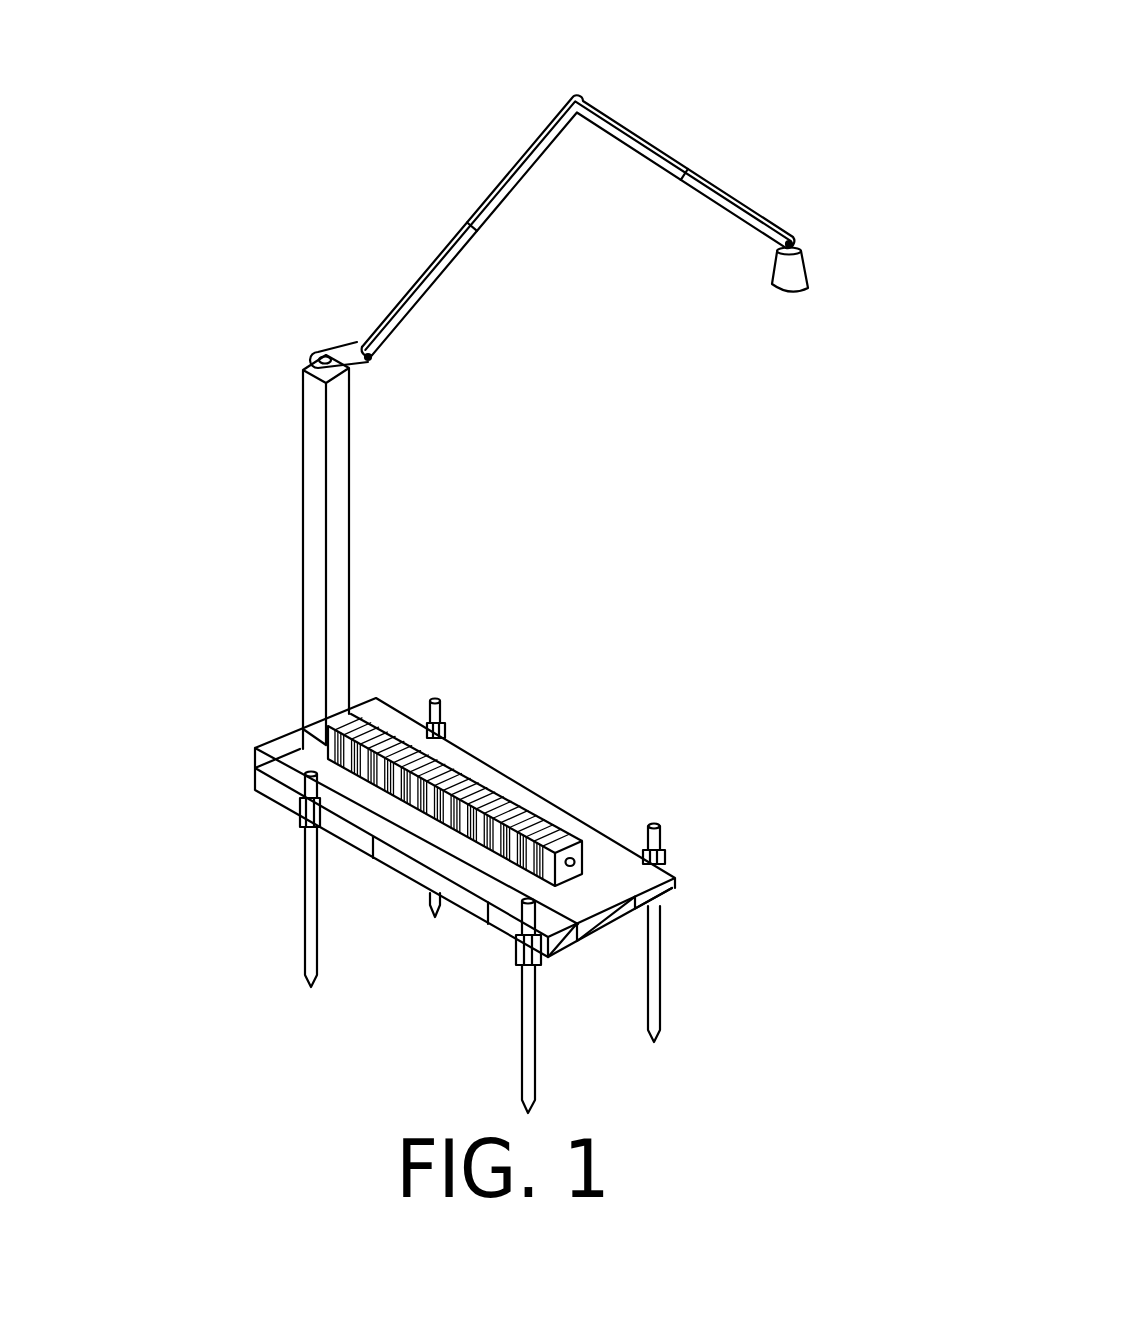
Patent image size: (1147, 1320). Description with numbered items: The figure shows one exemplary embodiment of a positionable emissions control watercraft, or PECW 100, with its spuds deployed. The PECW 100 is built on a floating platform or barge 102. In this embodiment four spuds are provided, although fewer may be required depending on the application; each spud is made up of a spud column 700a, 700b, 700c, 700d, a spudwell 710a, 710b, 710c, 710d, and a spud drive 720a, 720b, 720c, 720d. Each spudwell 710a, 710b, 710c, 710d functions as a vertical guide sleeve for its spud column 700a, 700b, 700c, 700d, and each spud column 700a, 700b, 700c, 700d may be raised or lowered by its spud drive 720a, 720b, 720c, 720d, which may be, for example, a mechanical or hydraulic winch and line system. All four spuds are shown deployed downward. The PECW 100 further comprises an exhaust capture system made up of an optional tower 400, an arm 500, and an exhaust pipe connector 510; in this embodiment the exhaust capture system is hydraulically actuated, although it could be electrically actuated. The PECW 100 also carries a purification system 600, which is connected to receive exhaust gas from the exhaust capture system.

The positionable emissions control watercraft 100 is at (805, 148).
The floating platform or barge 102 is at (490, 765).
The tower 400 is at (322, 562).
The arm 500 is at (467, 223).
The exhaust pipe connector 510 is at (780, 281).
The purification system 600 is at (512, 823).
The spud column 700a is at (305, 885).
The spud column 700b is at (528, 1033).
The spud column 700c is at (660, 910).
The spud column 700d is at (432, 727).
The spudwell 710a is at (300, 806).
The spudwell 710b is at (518, 950).
The spudwell 710c is at (660, 855).
The spudwell 710d is at (438, 723).
The spud drive 720a is at (311, 785).
The spud drive 720b is at (528, 917).
The spud drive 720c is at (648, 853).
The spud drive 720d is at (426, 720).